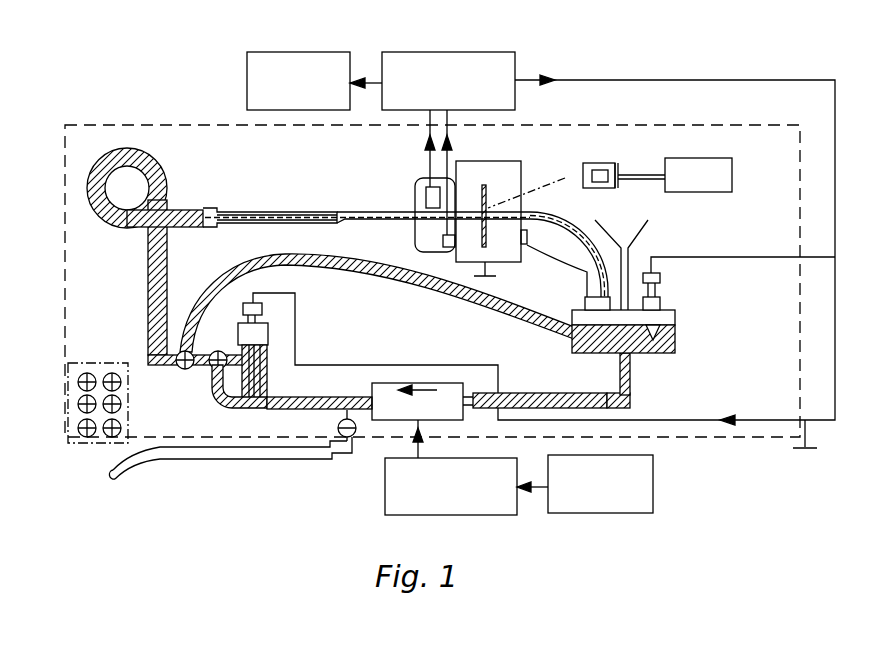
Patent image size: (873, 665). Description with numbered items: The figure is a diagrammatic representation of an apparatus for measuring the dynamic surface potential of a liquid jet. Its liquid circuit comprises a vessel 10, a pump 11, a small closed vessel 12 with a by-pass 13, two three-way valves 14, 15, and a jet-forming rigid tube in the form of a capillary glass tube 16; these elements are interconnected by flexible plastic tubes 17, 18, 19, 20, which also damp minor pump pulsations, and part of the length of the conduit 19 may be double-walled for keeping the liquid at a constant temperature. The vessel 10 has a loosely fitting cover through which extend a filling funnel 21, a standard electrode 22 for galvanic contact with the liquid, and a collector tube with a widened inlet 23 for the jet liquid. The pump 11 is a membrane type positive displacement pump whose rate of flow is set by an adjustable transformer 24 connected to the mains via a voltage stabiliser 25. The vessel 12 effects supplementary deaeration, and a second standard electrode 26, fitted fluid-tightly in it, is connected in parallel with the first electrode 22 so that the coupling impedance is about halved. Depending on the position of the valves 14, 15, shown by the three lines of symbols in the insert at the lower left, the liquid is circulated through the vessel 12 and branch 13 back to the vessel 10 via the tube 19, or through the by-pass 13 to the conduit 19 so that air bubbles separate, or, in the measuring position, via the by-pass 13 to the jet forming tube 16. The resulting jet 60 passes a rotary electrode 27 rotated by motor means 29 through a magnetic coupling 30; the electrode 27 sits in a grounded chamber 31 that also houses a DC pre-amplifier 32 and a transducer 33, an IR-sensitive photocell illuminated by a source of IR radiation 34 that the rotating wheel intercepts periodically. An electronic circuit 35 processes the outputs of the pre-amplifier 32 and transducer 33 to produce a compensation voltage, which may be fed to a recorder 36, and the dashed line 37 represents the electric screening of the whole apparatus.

The vessel 10 is at (676, 334).
The pump 11 is at (437, 388).
The small closed vessel 12 is at (268, 383).
The by-pass 13 is at (222, 396).
The three-way valve 14 is at (218, 352).
The three-way valve 15 is at (183, 370).
The capillary glass tube 16 is at (268, 211).
The flexible plastic tube 17 is at (532, 397).
The flexible plastic tube 18 is at (294, 410).
The conduit 19 is at (279, 268).
The flexible plastic tube 20 is at (148, 280).
The filling funnel 21 is at (648, 222).
The standard electrode 22 is at (660, 278).
The widened inlet 23 is at (567, 250).
The adjustable transformer 24 is at (385, 496).
The voltage stabiliser 25 is at (650, 497).
The second standard electrode 26 is at (268, 330).
The rotary electrode 27 is at (488, 200).
The motor means 29 is at (692, 172).
The magnetic coupling 30 is at (591, 165).
The grounded chamber 31 is at (465, 168).
The DC pre-amplifier 32 is at (425, 192).
The transducer 33 is at (443, 247).
The source of IR radiation 34 is at (527, 250).
The electronic circuit 35 is at (435, 63).
The recorder 36 is at (287, 68).
The electric screening 37 is at (116, 125).
The jet 60 is at (378, 218).